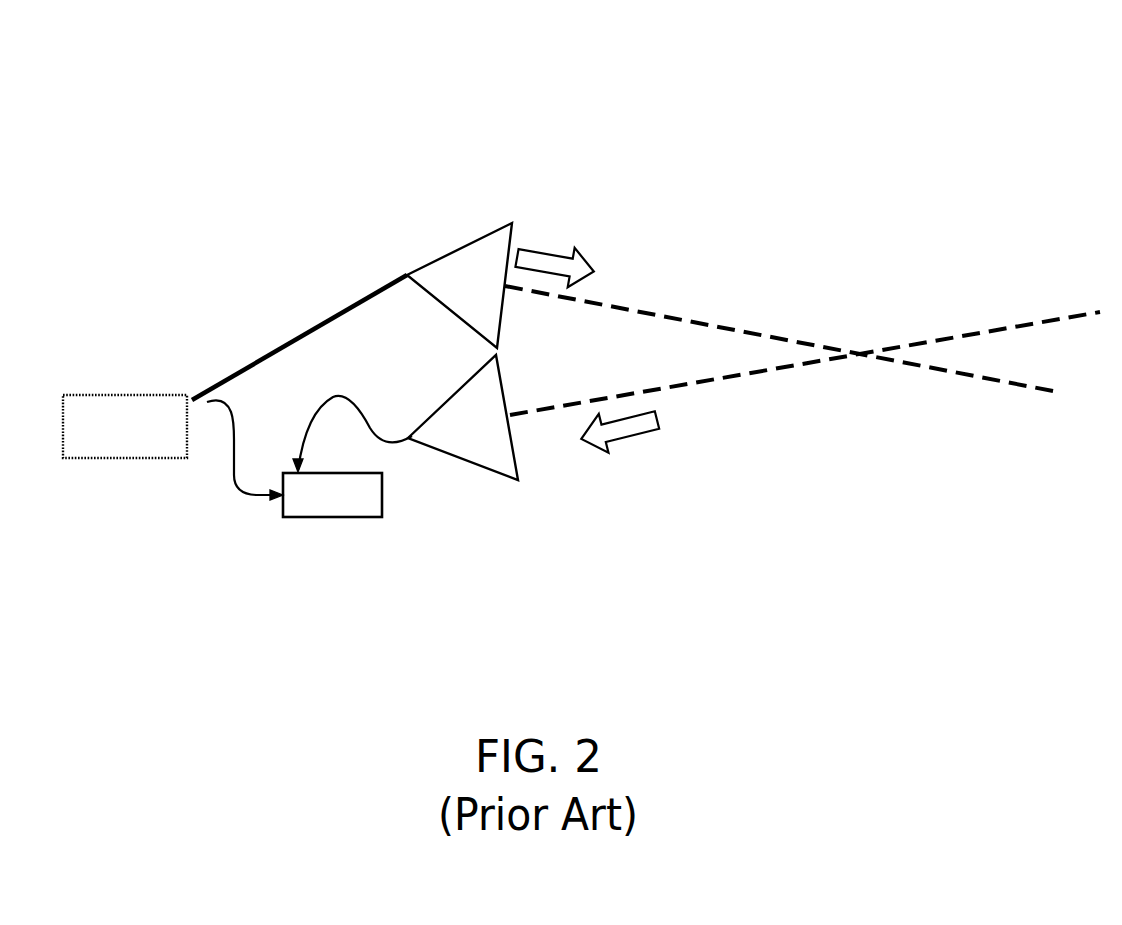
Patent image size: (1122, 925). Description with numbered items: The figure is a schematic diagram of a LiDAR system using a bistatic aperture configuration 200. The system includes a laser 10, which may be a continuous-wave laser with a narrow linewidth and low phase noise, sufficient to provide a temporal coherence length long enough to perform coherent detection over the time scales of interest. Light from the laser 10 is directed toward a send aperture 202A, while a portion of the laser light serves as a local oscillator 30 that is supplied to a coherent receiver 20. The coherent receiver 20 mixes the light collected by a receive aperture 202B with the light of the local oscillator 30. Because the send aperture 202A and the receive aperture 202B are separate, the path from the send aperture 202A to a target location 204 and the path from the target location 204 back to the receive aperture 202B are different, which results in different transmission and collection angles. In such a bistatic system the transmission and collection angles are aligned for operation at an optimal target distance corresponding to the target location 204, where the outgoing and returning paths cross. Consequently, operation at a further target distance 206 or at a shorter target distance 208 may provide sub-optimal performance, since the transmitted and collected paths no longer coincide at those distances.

The bistatic aperture configuration 200 is at (240, 160).
The laser 10 is at (108, 395).
The local oscillator 30 is at (233, 468).
The coherent receiver 20 is at (343, 507).
The send aperture 202A is at (494, 295).
The receive aperture 202B is at (499, 445).
The target location 204 is at (869, 330).
The further target distance 206 is at (1070, 361).
The shorter target distance 208 is at (650, 358).